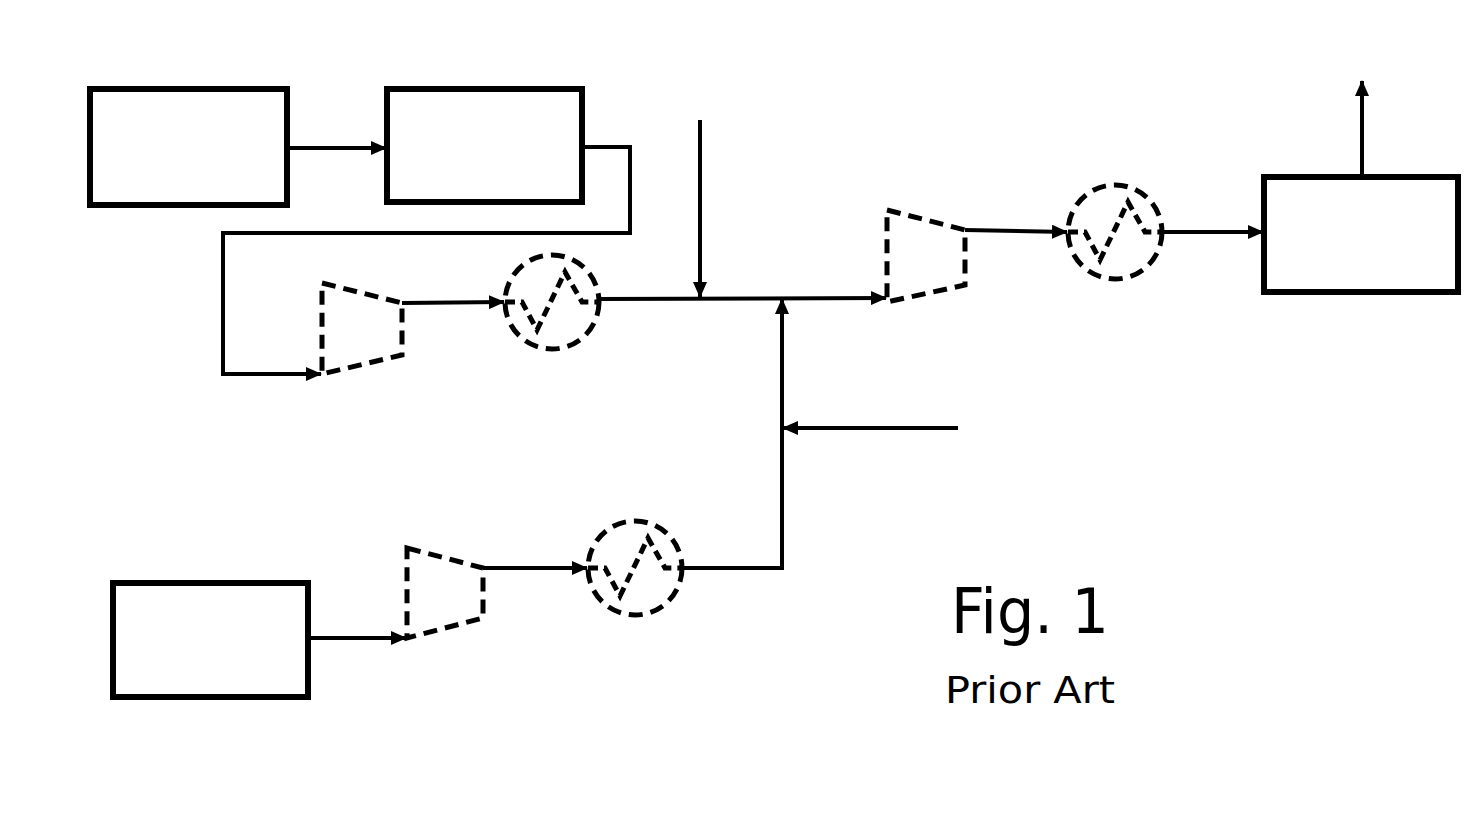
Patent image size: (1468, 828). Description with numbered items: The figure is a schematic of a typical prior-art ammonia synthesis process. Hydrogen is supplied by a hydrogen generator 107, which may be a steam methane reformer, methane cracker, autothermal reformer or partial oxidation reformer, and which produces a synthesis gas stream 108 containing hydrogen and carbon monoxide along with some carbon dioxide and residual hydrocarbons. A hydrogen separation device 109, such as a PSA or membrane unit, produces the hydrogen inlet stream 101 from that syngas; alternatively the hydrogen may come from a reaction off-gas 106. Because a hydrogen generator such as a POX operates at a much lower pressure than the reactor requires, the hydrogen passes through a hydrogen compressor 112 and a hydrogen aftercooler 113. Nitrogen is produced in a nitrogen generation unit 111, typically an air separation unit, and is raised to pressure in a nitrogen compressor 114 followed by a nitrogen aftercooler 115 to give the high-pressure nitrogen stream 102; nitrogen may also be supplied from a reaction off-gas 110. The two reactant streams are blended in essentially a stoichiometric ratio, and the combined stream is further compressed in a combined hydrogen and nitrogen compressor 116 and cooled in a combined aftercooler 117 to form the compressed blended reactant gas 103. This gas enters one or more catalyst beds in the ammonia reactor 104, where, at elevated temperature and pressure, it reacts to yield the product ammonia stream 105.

The hydrogen inlet stream 101 is at (742, 278).
The high-pressure nitrogen stream 102 is at (732, 433).
The compressed blended reactant gas 103 is at (832, 273).
The ammonia reactor 104 is at (1361, 234).
The product ammonia stream 105 is at (1362, 110).
The reaction off-gas 106 is at (700, 191).
The hydrogen generator 107 is at (188, 147).
The synthesis gas stream 108 is at (336, 130).
The hydrogen separation device 109 is at (484, 145).
The reaction off-gas 110 is at (902, 431).
The nitrogen generation unit 111 is at (210, 640).
The hydrogen compressor 112 is at (362, 328).
The hydrogen aftercooler 113 is at (552, 326).
The nitrogen compressor 114 is at (445, 593).
The nitrogen aftercooler 115 is at (635, 591).
The combined hydrogen and nitrogen compressor 116 is at (926, 256).
The combined aftercooler 117 is at (1115, 255).